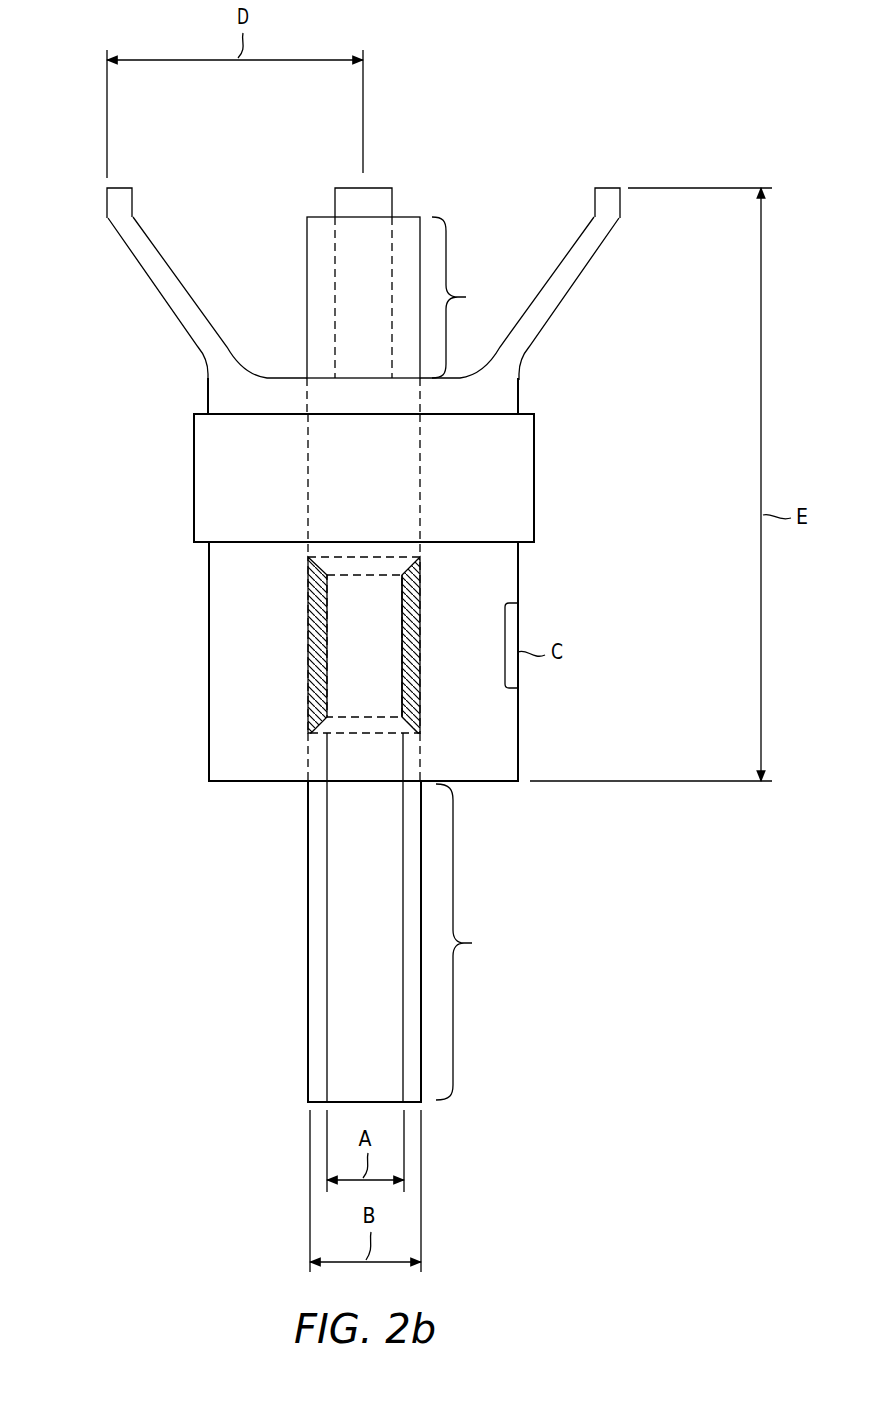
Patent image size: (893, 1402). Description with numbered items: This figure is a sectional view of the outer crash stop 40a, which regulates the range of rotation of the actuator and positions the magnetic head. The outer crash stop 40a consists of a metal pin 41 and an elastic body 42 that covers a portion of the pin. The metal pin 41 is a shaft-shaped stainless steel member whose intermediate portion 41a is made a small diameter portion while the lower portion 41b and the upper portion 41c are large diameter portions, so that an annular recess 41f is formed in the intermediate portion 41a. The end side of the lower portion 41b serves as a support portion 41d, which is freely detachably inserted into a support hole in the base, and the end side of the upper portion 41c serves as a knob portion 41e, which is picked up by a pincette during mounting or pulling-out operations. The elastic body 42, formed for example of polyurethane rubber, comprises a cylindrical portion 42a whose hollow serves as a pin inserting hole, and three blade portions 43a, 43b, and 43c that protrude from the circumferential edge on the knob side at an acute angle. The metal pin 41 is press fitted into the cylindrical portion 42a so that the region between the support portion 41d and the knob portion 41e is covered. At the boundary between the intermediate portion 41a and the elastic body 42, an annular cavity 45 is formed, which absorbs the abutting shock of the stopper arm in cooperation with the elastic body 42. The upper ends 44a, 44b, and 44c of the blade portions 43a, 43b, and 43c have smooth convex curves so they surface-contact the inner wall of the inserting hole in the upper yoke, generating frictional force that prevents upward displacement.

The outer crash stop 40a is at (67, 632).
The metal pin 41 is at (256, 876).
The intermediate portion 41a is at (346, 687).
The lower portion 41b is at (300, 997).
The upper portion 41c is at (346, 490).
The support portion 41d is at (479, 942).
The knob portion 41e is at (469, 297).
The annular recess 41f is at (400, 598).
The elastic body 42 is at (576, 476).
The cylindrical portion 42a is at (209, 735).
The blade portion 43a is at (574, 287).
The blade portion 43b is at (346, 295).
The blade portion 43c is at (160, 293).
The upper end 44a is at (592, 228).
The upper end 44b is at (378, 187).
The upper end 44c is at (107, 205).
The annular cavity 45 is at (308, 688).